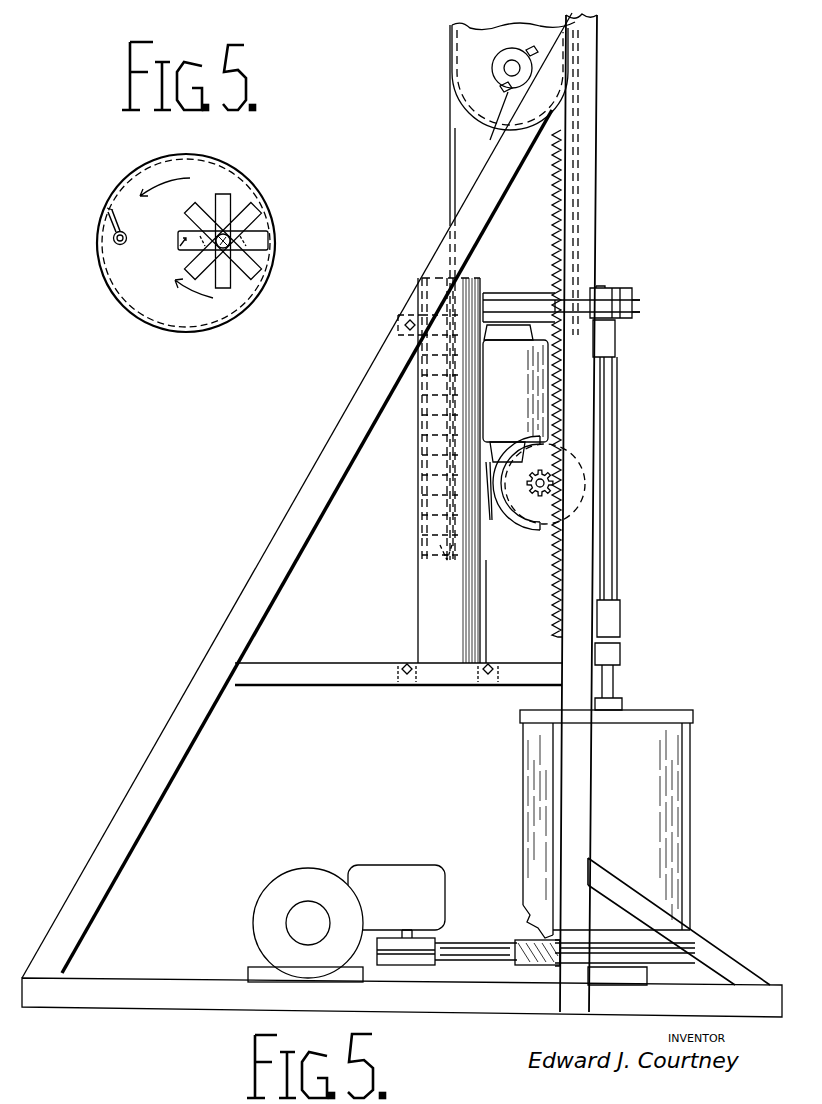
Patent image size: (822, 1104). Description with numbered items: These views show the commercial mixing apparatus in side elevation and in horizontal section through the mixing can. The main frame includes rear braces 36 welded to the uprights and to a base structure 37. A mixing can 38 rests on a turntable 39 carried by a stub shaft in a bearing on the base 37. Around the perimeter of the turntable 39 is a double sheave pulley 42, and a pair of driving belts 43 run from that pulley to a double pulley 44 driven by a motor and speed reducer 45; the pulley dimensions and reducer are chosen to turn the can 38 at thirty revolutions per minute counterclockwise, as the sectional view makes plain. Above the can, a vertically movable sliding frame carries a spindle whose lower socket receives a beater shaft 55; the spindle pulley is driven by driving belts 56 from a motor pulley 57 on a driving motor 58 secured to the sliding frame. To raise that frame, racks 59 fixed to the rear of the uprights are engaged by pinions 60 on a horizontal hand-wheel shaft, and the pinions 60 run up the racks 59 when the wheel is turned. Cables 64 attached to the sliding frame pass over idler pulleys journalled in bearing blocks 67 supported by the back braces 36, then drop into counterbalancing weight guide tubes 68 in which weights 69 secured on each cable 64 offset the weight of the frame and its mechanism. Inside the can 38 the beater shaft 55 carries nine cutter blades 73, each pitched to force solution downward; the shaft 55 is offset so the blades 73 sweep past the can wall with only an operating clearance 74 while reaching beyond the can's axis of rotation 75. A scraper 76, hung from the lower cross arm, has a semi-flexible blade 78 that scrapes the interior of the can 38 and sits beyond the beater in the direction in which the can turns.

In FIG. 5, the rear brace 36 is at (252, 568).
In FIG. 5, the base structure 37 is at (165, 978).
In FIG. 6, the mixing can 38 is at (130, 322).
In FIG. 5, the mixing can 38 is at (692, 858).
In FIG. 5, the turntable 39 is at (515, 945).
In FIG. 5, the double sheave pulley 42 is at (525, 963).
In FIG. 5, the driving belts 43 is at (492, 950).
In FIG. 5, the double pulley 44 is at (418, 966).
In FIG. 5, the motor and speed reducer 45 is at (347, 865).
In FIG. 6, the beater shaft 55 is at (262, 240).
In FIG. 5, the beater shaft 55 is at (618, 682).
In FIG. 5, the driving belts 56 is at (548, 290).
In FIG. 5, the motor pulley 57 is at (498, 294).
In FIG. 5, the driving motor 58 is at (532, 527).
In FIG. 5, the rack 59 is at (553, 234).
In FIG. 5, the pinion 60 is at (548, 500).
In FIG. 5, the cable 64 is at (448, 198).
In FIG. 5, the bearing block 67 is at (500, 132).
In FIG. 5, the counterbalancing weight guide tube 68 is at (481, 603).
In FIG. 5, the weight 69 is at (432, 505).
In FIG. 6, the cutter blade 73 is at (262, 212).
In FIG. 6, the operating clearance 74 is at (272, 262).
In FIG. 6, the axis of rotation 75 is at (200, 250).
In FIG. 6, the scraper 76 is at (134, 229).
In FIG. 6, the semi-flexible blade 78 is at (110, 213).